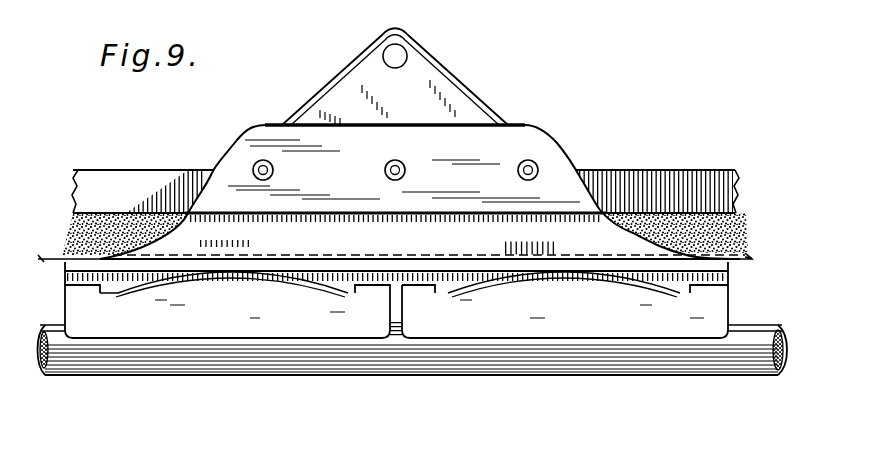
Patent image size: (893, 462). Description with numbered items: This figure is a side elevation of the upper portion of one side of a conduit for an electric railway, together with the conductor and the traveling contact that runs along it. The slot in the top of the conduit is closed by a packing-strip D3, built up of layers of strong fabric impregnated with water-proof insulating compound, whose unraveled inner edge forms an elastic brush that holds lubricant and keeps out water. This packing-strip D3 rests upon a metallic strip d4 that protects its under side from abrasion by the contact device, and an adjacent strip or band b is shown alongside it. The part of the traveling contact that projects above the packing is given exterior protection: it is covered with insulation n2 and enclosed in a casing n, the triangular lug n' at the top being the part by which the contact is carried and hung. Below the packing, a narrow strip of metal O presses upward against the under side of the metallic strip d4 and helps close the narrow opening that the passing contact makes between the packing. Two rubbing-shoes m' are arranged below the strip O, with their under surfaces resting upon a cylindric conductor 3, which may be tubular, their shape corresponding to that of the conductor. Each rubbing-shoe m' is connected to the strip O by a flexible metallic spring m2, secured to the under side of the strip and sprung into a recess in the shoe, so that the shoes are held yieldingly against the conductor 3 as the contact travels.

The casing n is at (395, 76).
The insulation n2 is at (527, 159).
The bracket plate n' is at (420, 192).
The flange strip b is at (668, 186).
The packing-strip D3 is at (744, 237).
The metallic strip d4 is at (406, 268).
The strip of metal o is at (725, 263).
The flexible metallic spring m2 is at (536, 278).
The rubbing-shoe m' is at (396, 297).
The cylindric conductor 3 is at (53, 327).